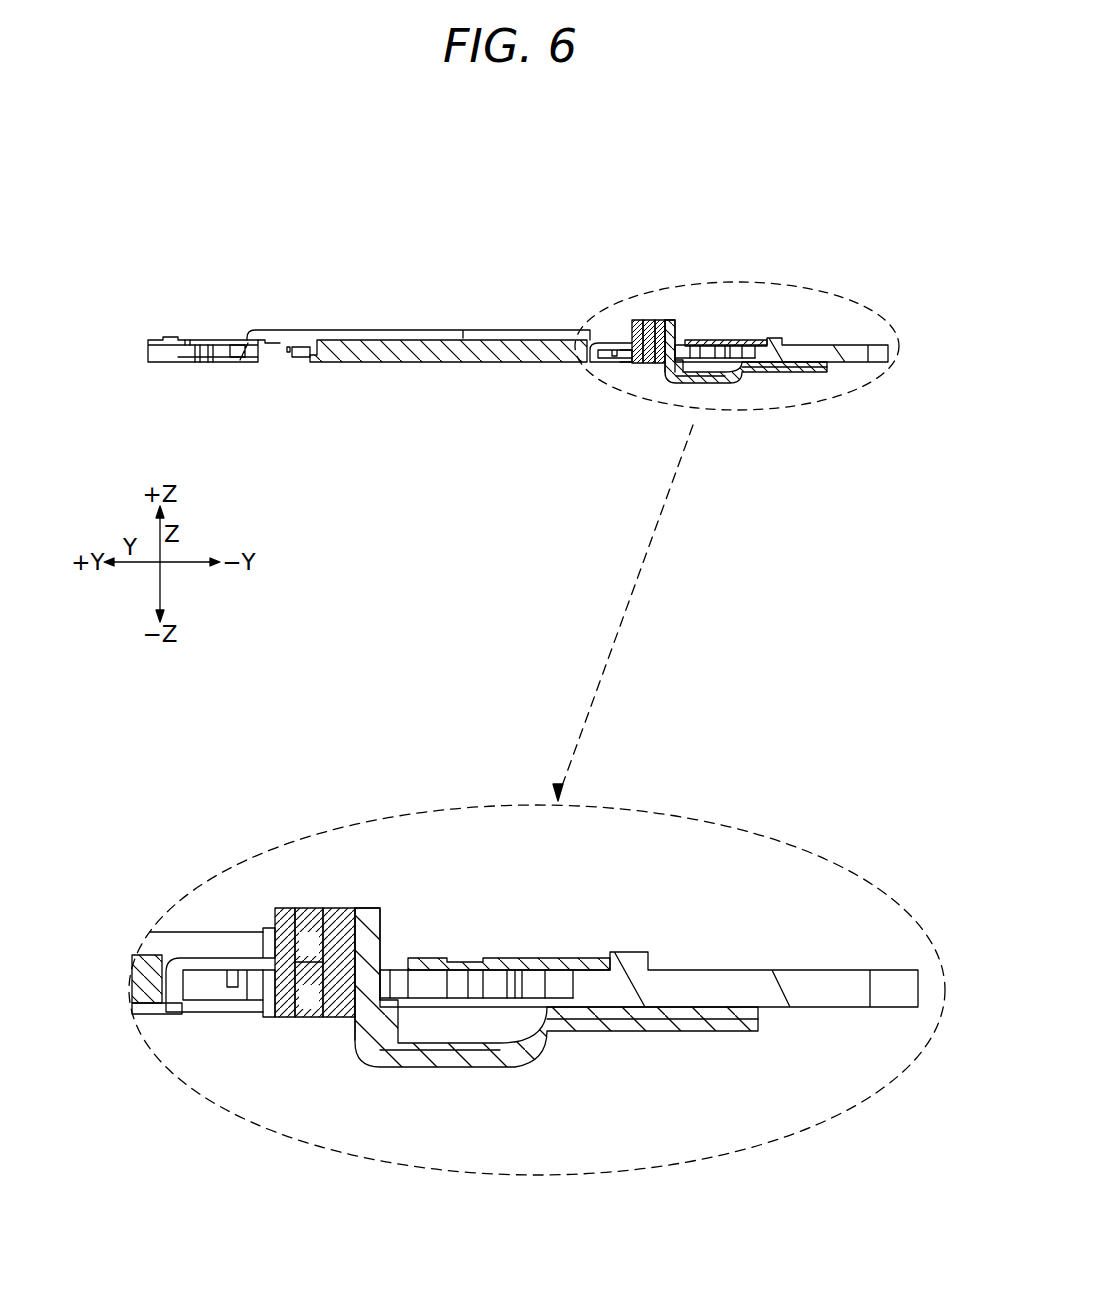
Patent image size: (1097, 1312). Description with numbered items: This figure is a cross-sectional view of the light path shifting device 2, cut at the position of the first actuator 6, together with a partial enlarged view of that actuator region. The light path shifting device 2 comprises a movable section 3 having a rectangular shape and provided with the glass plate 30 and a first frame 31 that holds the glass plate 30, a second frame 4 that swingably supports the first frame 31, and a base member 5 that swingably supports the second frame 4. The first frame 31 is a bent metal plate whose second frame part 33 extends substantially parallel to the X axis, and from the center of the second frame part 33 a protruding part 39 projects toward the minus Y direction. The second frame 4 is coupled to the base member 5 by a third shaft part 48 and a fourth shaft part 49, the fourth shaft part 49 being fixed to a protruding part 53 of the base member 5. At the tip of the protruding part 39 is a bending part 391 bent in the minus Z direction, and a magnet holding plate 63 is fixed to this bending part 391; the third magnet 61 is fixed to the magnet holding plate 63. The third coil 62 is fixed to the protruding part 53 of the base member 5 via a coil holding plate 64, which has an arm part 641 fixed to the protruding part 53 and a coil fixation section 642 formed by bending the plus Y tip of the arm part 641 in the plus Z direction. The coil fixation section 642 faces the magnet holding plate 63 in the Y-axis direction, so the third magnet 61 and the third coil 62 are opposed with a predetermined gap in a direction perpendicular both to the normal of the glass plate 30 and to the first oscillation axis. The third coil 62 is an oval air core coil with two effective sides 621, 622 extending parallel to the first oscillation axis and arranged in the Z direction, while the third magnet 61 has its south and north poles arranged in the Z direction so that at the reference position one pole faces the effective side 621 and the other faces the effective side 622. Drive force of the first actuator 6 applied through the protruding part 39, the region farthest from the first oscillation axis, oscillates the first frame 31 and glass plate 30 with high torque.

The light path shifting device 2 is at (420, 220).
The movable section 3 is at (275, 254).
The glass plate 30 is at (358, 345).
The first frame 31 is at (305, 338).
The second frame part 33 is at (163, 1017).
The second frame 4 is at (235, 362).
The base member 5 is at (167, 363).
The third shaft part 48 is at (200, 340).
The protruding part 39 is at (612, 344).
The bending part 391 is at (628, 362).
The first actuator 6 is at (639, 383).
The third magnet 61 is at (648, 320).
The third coil 62 is at (663, 320).
The effective side 621 is at (338, 908).
The effective side 622 is at (379, 940).
The magnet holding plate 63 is at (637, 320).
The coil holding plate 64 is at (712, 485).
The arm part 641 is at (772, 385).
The coil fixation section 642 is at (706, 383).
The fourth shaft part 49 is at (740, 340).
The protruding part 53 is at (792, 340).